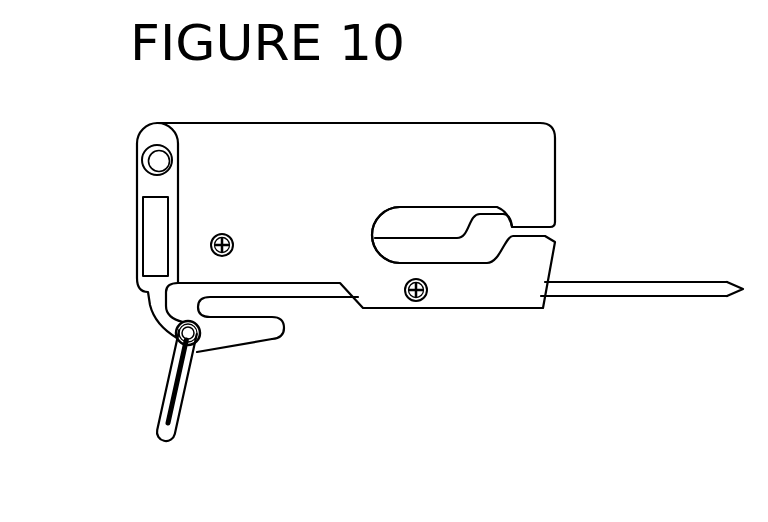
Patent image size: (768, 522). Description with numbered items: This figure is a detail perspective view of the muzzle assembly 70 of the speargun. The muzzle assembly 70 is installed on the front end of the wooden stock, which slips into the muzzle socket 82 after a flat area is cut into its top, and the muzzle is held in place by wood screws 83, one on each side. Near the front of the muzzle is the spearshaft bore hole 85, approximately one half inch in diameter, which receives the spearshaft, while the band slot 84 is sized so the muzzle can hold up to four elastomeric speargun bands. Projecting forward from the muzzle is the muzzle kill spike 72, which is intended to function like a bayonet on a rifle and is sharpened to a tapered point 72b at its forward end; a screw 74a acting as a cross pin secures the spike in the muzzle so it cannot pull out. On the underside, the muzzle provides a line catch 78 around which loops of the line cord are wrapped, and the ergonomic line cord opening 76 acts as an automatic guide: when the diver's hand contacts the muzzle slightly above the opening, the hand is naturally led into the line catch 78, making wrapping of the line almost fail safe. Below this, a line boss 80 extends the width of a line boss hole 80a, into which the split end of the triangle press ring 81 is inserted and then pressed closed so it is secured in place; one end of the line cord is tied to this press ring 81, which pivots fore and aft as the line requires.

The muzzle assembly 70 is at (507, 123).
The muzzle kill spike 72 is at (642, 292).
The tapered point 72b is at (723, 278).
The fastener screw 74a is at (414, 301).
The ergonomic line cord opening 76 is at (280, 306).
The line catch 78 is at (241, 340).
The line boss 80 is at (160, 316).
The line boss hole 80a is at (170, 338).
The triangle press ring 81 is at (155, 423).
The muzzle socket 82 is at (158, 228).
The wood screws 83 is at (210, 254).
The band slot 84 is at (435, 227).
The spearshaft bore hole 85 is at (158, 164).